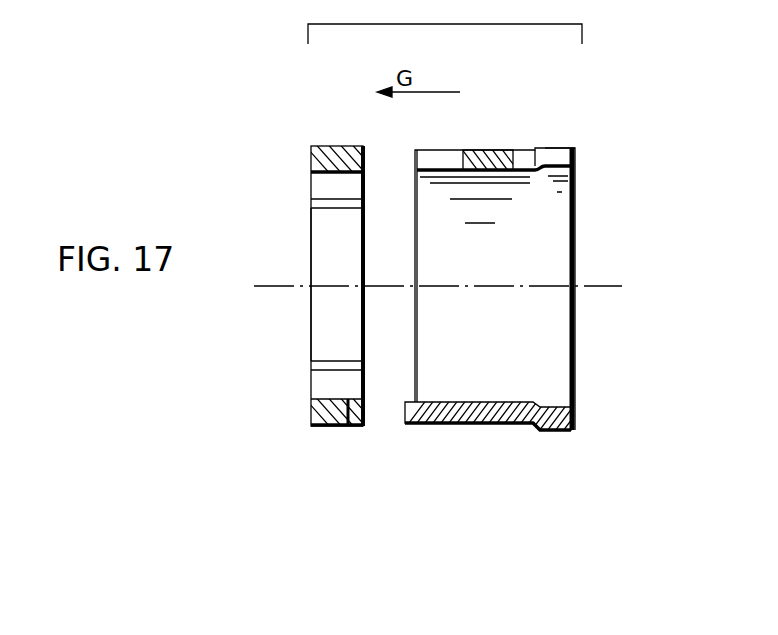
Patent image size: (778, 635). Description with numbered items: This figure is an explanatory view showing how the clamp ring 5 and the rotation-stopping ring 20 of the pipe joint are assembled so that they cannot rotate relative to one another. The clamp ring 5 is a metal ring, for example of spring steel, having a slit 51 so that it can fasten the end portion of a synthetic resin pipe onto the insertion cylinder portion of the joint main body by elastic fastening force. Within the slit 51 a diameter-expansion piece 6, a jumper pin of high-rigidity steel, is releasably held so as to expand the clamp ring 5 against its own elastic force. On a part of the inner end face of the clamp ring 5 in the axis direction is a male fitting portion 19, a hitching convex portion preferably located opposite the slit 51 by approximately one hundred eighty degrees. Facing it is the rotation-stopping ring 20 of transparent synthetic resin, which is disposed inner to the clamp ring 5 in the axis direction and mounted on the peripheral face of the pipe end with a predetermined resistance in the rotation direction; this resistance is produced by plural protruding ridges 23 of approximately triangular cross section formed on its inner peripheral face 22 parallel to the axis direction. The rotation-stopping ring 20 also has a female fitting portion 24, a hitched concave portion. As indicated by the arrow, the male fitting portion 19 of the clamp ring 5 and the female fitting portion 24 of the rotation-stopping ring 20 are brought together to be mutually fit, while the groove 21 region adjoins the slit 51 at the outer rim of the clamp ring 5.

The clamp ring 5 is at (578, 232).
The diameter-expansion piece 6 is at (490, 152).
The male fitting portion 19 is at (405, 410).
The rotation-stopping ring 20 is at (301, 253).
The groove 21 is at (547, 150).
The inner peripheral face 22 is at (350, 274).
The protruding ridge 23 is at (328, 208).
The female fitting portion 24 is at (355, 427).
The slit 51 is at (565, 150).